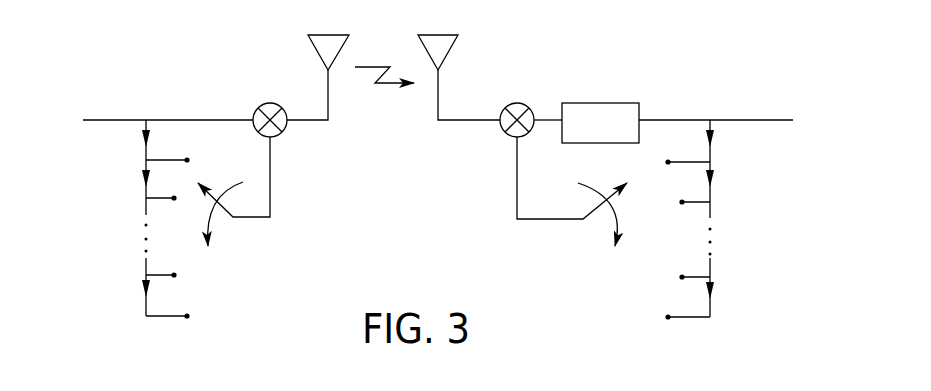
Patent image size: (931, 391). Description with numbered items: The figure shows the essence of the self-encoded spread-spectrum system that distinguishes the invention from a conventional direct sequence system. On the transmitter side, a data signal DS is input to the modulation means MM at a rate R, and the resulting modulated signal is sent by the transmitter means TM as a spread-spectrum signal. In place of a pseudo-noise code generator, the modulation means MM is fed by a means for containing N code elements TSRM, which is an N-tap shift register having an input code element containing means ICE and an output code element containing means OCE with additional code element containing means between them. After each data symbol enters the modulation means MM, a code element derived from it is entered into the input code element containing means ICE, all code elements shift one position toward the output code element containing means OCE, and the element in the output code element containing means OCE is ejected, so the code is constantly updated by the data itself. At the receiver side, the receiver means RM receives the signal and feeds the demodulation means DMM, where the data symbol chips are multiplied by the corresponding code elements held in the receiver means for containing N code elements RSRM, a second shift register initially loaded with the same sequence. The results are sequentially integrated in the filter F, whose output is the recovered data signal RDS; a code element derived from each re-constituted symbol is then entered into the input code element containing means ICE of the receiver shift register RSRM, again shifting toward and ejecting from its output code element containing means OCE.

The data signal DS is at (156, 85).
The transmitter means for containing N code elements TSRM is at (127, 216).
The input code element containing means ICE is at (142, 156).
The output code element containing means OCE is at (142, 318).
The modulation means MM is at (284, 135).
The transmitter means TM is at (318, 65).
The receiver means RM is at (463, 77).
The demodulation means DMM is at (522, 101).
The filter F is at (605, 100).
The recovered data signal RDS is at (724, 85).
The receiver means for containing N code elements RSRM is at (729, 221).